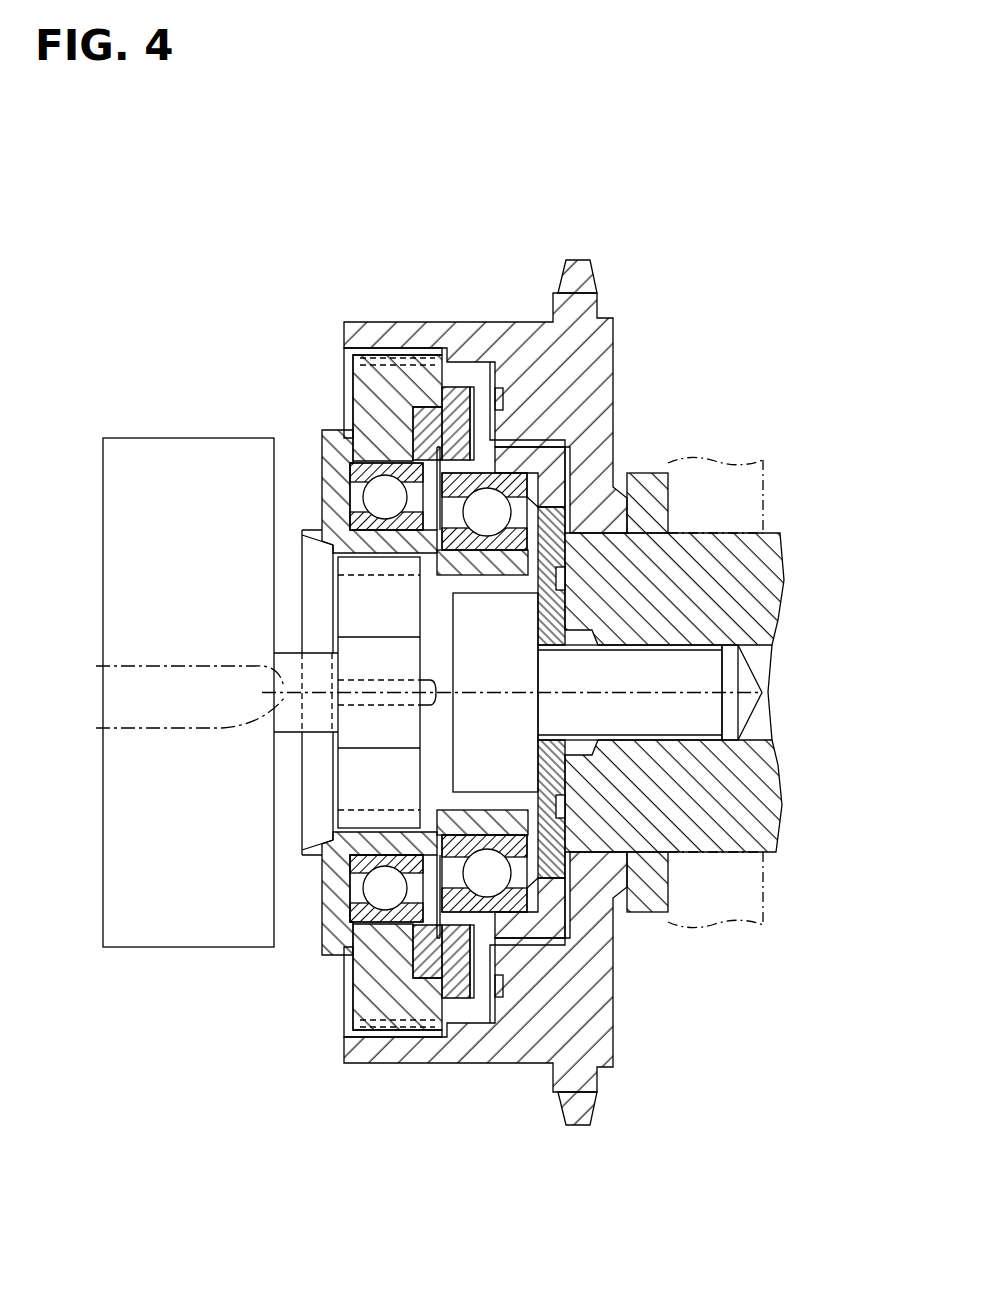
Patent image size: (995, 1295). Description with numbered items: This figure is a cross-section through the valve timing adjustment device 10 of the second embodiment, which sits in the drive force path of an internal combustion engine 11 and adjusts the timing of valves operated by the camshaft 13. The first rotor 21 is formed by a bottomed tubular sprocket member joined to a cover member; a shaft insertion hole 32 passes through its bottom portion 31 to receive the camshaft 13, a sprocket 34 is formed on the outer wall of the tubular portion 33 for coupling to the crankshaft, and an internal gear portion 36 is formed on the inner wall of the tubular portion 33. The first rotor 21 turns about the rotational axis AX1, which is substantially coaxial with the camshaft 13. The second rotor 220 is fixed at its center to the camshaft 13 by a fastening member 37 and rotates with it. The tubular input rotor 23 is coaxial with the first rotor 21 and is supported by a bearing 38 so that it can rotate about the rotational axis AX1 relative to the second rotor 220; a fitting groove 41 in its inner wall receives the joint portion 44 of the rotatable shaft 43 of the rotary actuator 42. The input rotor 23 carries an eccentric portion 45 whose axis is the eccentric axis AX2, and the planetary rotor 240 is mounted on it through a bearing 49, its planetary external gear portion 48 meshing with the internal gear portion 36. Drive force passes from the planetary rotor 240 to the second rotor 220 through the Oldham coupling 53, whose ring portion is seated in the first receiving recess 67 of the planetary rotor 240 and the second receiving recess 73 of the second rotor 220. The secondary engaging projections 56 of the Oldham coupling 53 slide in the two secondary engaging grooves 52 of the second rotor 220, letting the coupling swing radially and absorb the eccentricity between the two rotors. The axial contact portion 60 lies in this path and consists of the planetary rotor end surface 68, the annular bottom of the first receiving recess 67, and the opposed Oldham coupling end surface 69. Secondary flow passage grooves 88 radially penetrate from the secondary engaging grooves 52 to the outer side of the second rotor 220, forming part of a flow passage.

The valve timing adjustment device 10 is at (305, 300).
The internal combustion engine 11 is at (770, 440).
The camshaft 13 is at (778, 553).
The first rotor 21 is at (613, 318).
The input rotor 23 is at (305, 912).
The bottom portion 31 is at (598, 438).
The shaft insertion hole 32 is at (622, 550).
The tubular portion 33 is at (375, 1053).
The sprocket 34 is at (582, 264).
The internal gear portion 36 is at (353, 352).
The fastening member 37 is at (700, 713).
The bearing 38 is at (497, 873).
The fitting groove 41 is at (378, 553).
The rotary actuator 42 is at (130, 438).
The rotatable shaft 43 is at (295, 723).
The joint portion 44 is at (360, 775).
The eccentric portion 45 is at (375, 487).
The planetary external gear portion 48 is at (388, 352).
The bearing 49 is at (378, 886).
The secondary engaging grooves 52 is at (447, 400).
The Oldham coupling 53 is at (430, 985).
The secondary engaging projections 56 is at (462, 405).
The axial contact portion 60 is at (461, 332).
The first receiving recess 67 is at (440, 980).
The planetary rotor end surface 68 is at (472, 410).
The Oldham coupling end surface 69 is at (425, 420).
The second receiving recess 73 is at (485, 1005).
The secondary flow passage grooves 88 is at (447, 975).
The second rotor 220 is at (507, 398).
The planetary rotor 240 is at (373, 410).
The rotational axis AX1 is at (407, 717).
The eccentric axis AX2 is at (168, 671).